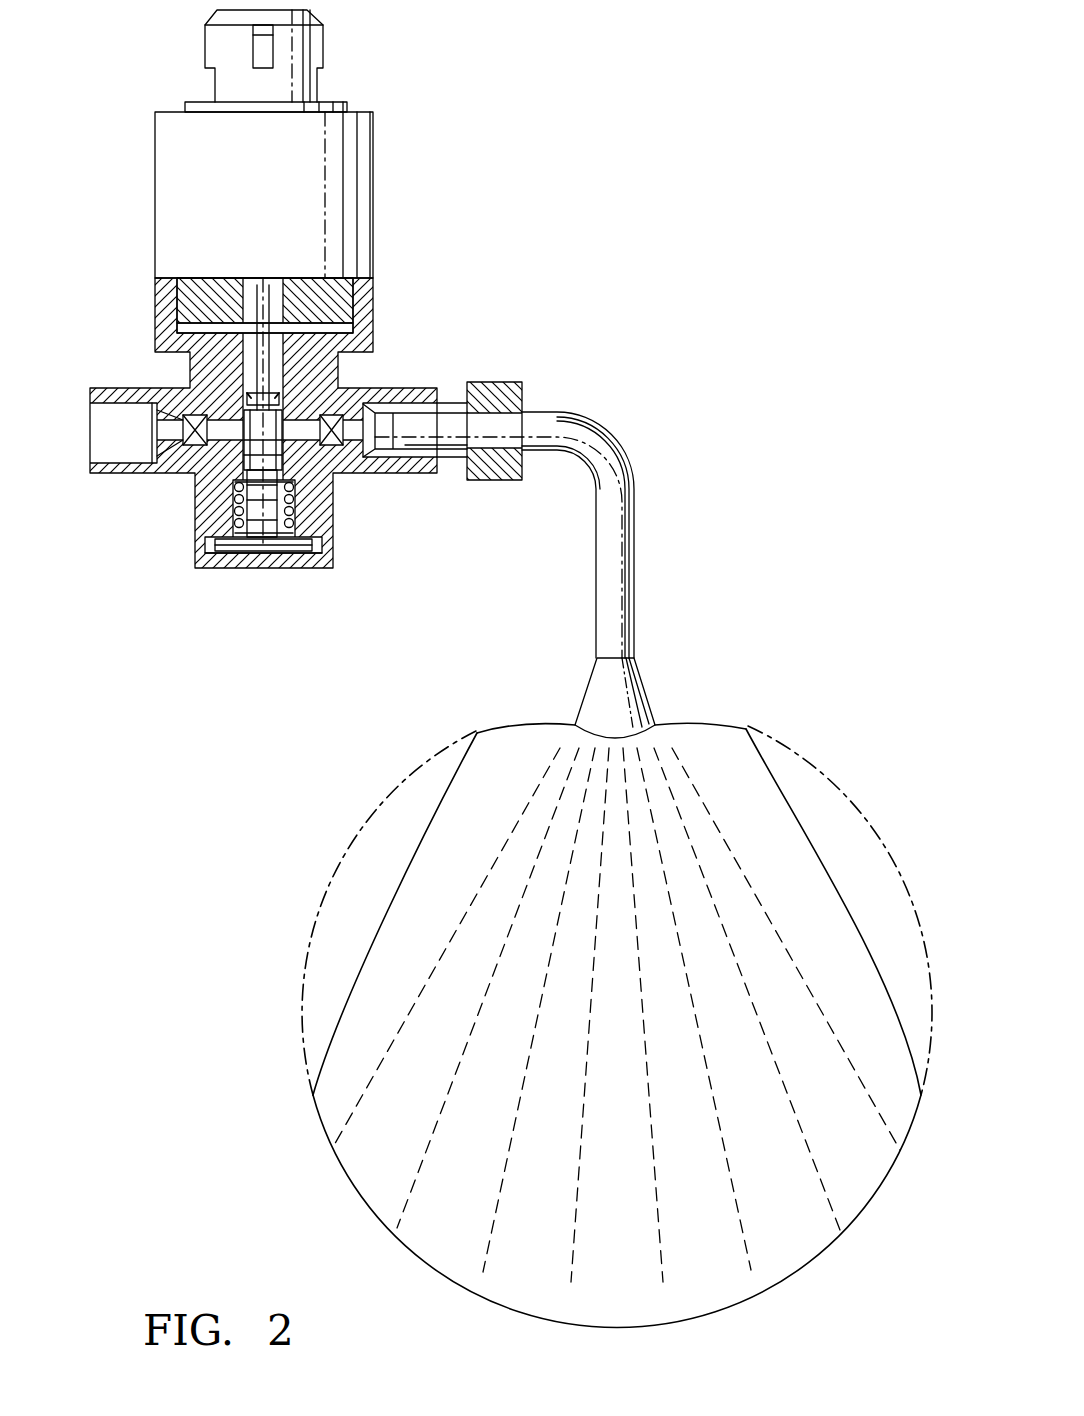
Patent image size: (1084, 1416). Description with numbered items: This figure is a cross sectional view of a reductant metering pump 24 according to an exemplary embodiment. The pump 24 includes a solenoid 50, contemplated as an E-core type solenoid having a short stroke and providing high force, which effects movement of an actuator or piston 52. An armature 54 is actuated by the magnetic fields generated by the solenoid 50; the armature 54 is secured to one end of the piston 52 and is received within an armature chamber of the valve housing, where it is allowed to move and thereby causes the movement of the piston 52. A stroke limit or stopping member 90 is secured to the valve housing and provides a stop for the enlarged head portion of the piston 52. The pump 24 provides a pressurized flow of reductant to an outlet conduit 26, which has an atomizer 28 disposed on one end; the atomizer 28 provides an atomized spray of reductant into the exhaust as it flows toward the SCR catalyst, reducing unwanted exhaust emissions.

The reductant metering pump 24 is at (405, 112).
The solenoid 50 is at (172, 143).
The armature 54 is at (342, 300).
The piston 52 is at (287, 367).
The stopping member 90 is at (223, 568).
The outlet conduit 26 is at (627, 463).
The atomizer 28 is at (645, 677).